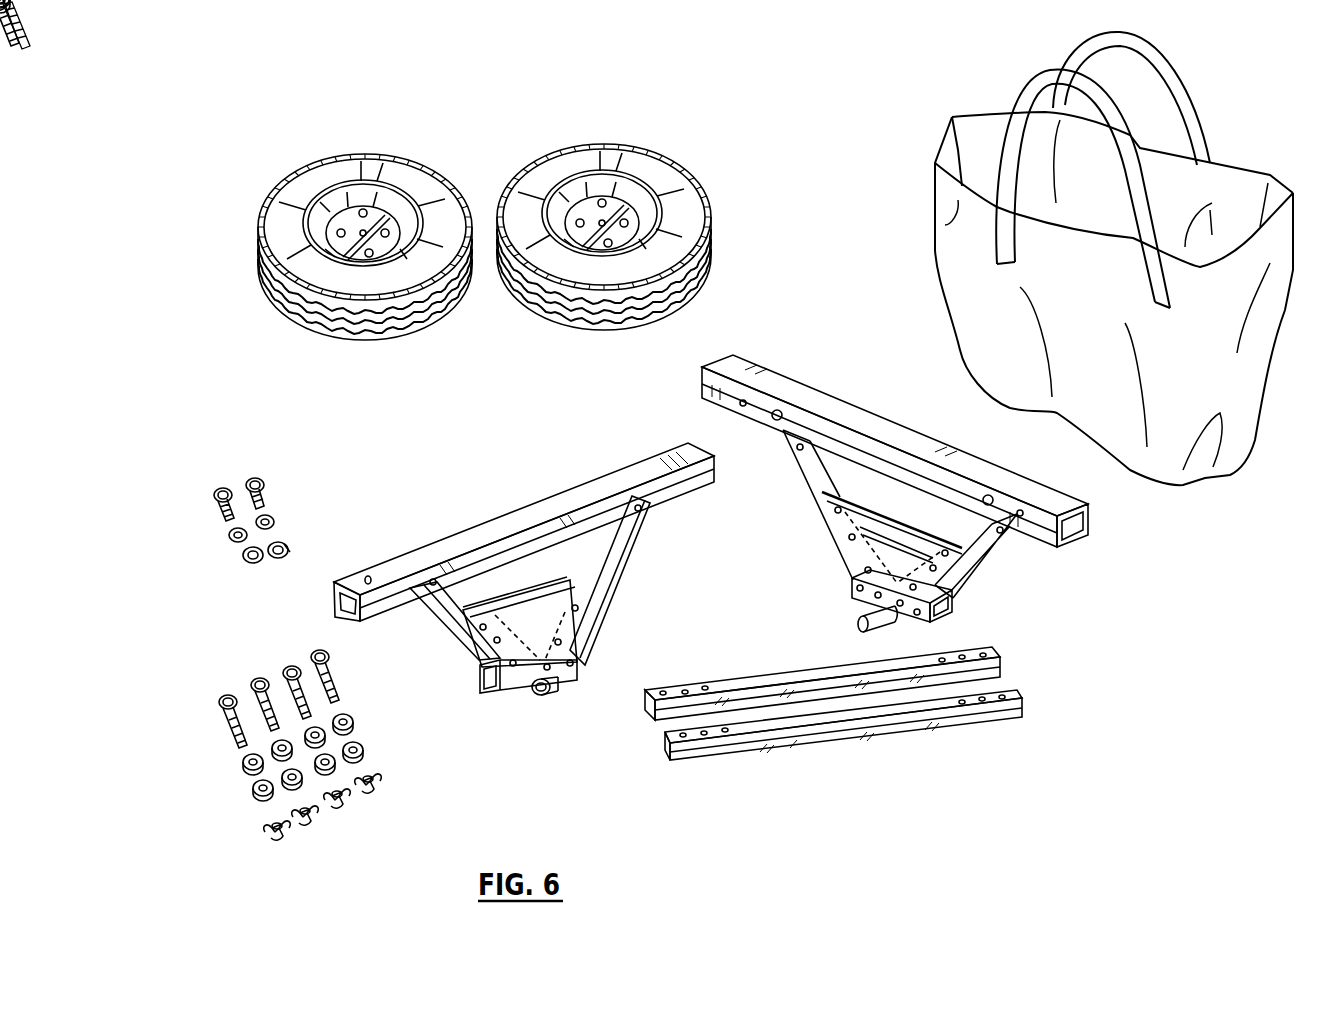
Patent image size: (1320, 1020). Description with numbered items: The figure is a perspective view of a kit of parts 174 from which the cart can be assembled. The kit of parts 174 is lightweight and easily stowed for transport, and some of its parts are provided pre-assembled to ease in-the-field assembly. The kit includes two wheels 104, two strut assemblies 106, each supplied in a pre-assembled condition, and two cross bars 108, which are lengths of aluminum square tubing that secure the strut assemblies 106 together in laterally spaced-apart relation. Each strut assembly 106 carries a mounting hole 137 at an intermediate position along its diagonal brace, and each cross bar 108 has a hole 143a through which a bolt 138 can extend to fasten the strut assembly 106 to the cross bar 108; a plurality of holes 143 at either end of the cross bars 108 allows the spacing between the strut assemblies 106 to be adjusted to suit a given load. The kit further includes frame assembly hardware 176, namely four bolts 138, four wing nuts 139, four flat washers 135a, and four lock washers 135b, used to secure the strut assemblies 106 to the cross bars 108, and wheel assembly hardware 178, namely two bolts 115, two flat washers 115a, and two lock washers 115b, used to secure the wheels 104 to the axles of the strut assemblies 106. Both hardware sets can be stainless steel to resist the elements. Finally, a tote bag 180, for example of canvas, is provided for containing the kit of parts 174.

The wheel 104 is at (270, 192).
The strut assembly 106 is at (545, 502).
The cross bar 108 is at (843, 687).
The bolt 115 is at (263, 496).
The flat washer 115a is at (275, 520).
The lock washer 115b is at (303, 553).
The flat washer 135a is at (348, 720).
The lock washer 135b is at (378, 744).
The mounting hole 137 is at (608, 531).
The bolt 138 is at (332, 675).
The wing nut 139 is at (378, 778).
The hole 143 is at (663, 690).
The hole 143a is at (685, 690).
The kit of parts 174 is at (801, 159).
The frame assembly hardware 176 is at (222, 665).
The wheel assembly hardware 178 is at (215, 482).
The tote bag 180 is at (968, 318).